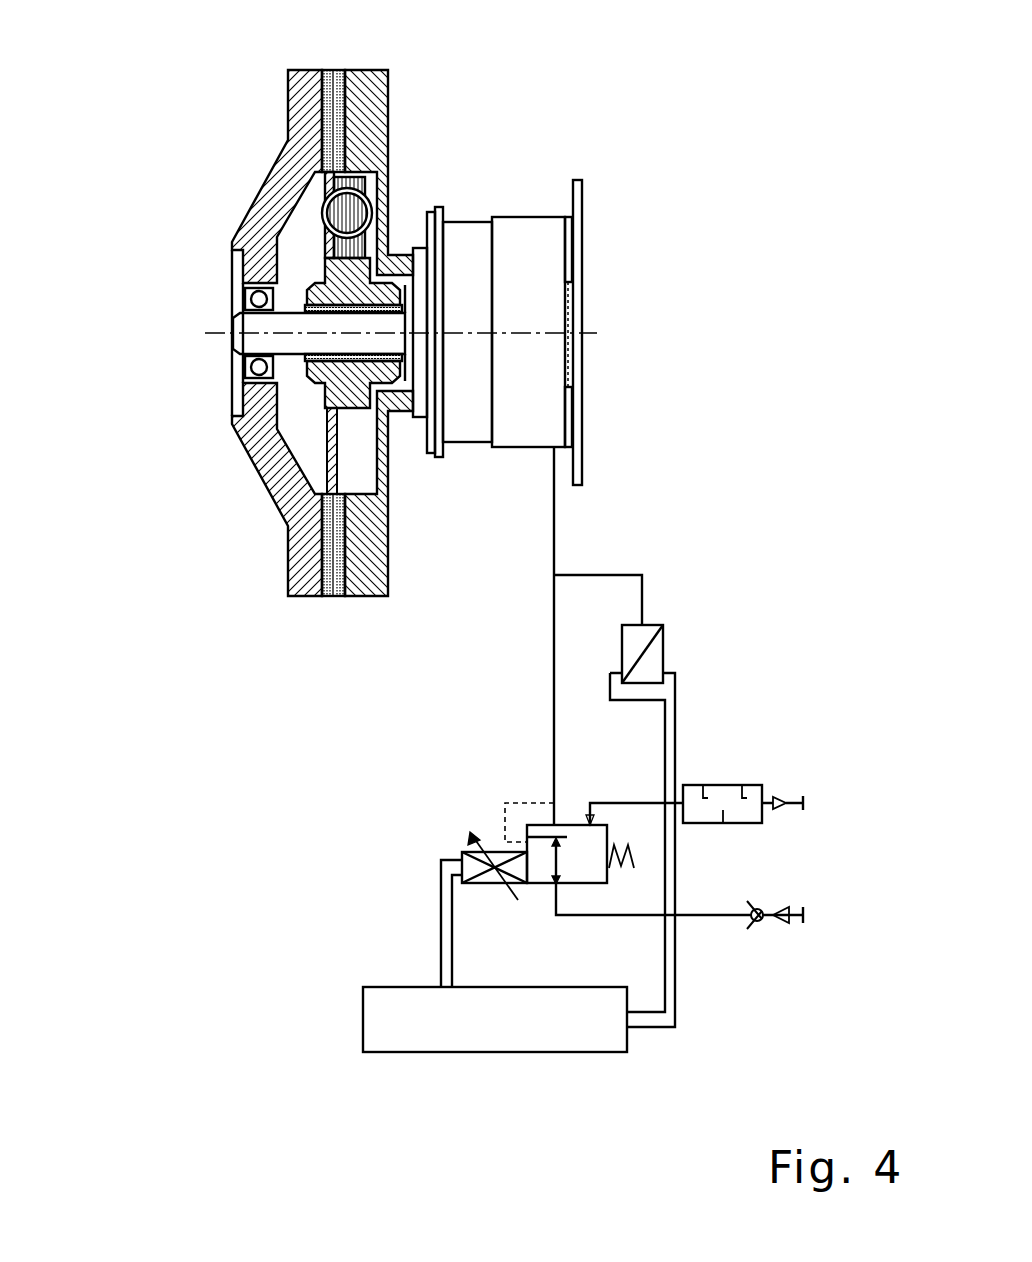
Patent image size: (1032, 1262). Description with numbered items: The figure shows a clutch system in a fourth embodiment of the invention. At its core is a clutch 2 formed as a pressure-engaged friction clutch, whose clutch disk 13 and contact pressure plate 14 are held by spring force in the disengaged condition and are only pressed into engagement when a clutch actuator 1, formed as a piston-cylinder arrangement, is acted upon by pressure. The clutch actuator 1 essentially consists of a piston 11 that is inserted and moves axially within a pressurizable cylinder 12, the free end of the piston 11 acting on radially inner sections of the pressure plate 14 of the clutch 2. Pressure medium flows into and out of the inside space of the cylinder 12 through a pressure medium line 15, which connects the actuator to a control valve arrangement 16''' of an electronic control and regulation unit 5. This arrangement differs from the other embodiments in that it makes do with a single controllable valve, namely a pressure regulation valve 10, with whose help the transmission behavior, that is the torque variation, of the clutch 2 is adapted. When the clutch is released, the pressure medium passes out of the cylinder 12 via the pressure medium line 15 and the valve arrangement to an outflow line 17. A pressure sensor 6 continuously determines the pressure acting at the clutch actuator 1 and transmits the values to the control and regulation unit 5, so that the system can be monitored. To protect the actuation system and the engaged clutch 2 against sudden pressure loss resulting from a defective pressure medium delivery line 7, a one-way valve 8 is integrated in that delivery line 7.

The clutch actuator 1 is at (487, 222).
The clutch 2 is at (414, 170).
The control and regulation unit 5 is at (393, 1007).
The pressure sensor 6 is at (663, 647).
The pressure medium delivery line 7 is at (795, 918).
The one-way valve 8 is at (757, 921).
The pressure regulation valve 10 is at (585, 868).
The piston 11 is at (466, 250).
The cylinder 12 is at (530, 243).
The clutch disk 13 is at (330, 470).
The contact pressure plate 14 is at (360, 557).
The pressure medium line 15 is at (554, 530).
The control valve arrangement 16''' is at (296, 882).
The outflow line 17 is at (627, 803).